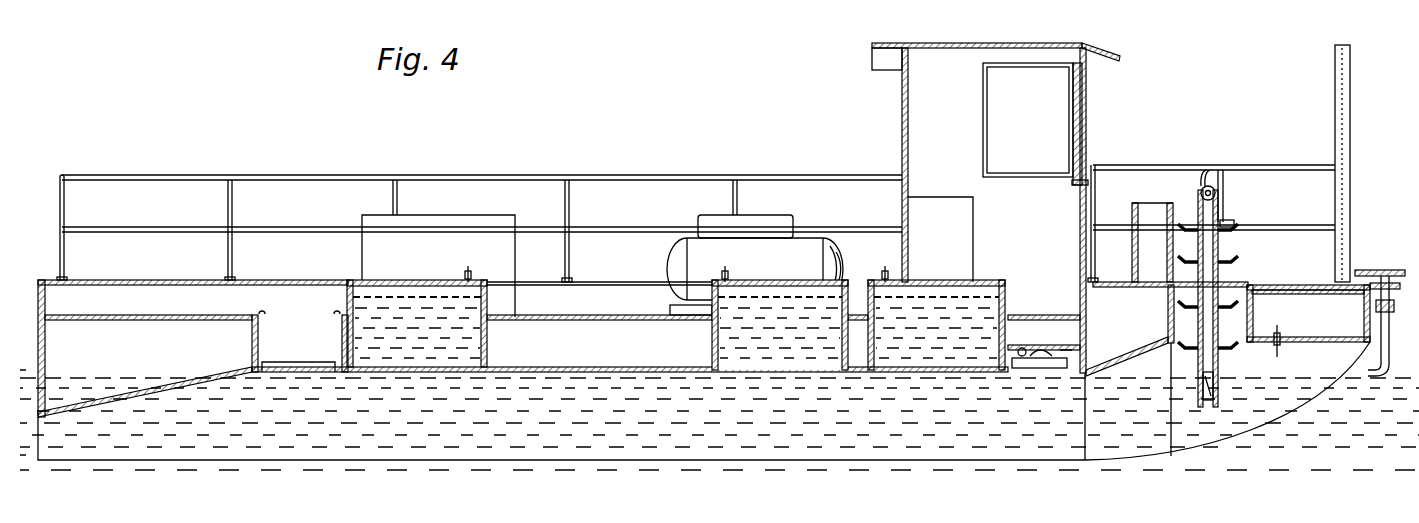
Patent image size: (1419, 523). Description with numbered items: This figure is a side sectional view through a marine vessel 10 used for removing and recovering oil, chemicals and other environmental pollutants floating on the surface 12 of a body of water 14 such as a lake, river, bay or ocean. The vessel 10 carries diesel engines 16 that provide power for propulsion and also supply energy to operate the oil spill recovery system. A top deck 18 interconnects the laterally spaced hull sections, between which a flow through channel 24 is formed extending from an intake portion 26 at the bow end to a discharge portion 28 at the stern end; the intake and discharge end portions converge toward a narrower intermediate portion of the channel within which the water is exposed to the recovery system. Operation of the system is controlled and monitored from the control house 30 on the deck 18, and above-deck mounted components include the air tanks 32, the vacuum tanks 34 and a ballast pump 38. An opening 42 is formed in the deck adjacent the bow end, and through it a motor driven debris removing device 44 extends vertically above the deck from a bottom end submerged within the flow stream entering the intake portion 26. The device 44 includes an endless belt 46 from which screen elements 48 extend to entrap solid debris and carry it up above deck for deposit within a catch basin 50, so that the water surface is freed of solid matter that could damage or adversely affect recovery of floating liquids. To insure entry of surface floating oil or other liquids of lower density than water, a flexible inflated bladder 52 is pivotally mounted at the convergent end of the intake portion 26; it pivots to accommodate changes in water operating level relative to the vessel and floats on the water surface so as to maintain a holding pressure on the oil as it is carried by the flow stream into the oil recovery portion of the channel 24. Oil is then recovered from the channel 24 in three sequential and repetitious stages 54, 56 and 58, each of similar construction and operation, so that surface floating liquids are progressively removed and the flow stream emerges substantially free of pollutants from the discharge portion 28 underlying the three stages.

The marine vessel 10 is at (328, 160).
The surface of the body of water 12 is at (1302, 375).
The body of water 14 is at (1385, 367).
The diesel engines 16 is at (306, 355).
The top deck 18 is at (603, 315).
The flow through channel 24 is at (638, 430).
The intake portion 26 is at (1252, 363).
The discharge portion 28 is at (150, 440).
The control house 30 is at (900, 92).
The air tanks 32 is at (708, 258).
The vacuum tanks 34 is at (766, 226).
The ballast pump 38 is at (500, 216).
The opening 42 is at (1237, 290).
The debris removing device 44 is at (1192, 206).
The endless belt 46 is at (1222, 250).
The screen elements 48 is at (1228, 222).
The catch basin 50 is at (1145, 210).
The flexible inflated bladder 52 is at (1090, 358).
The first oil recovery stage 54 is at (992, 276).
The second oil recovery stage 56 is at (801, 274).
The third oil recovery stage 58 is at (421, 272).